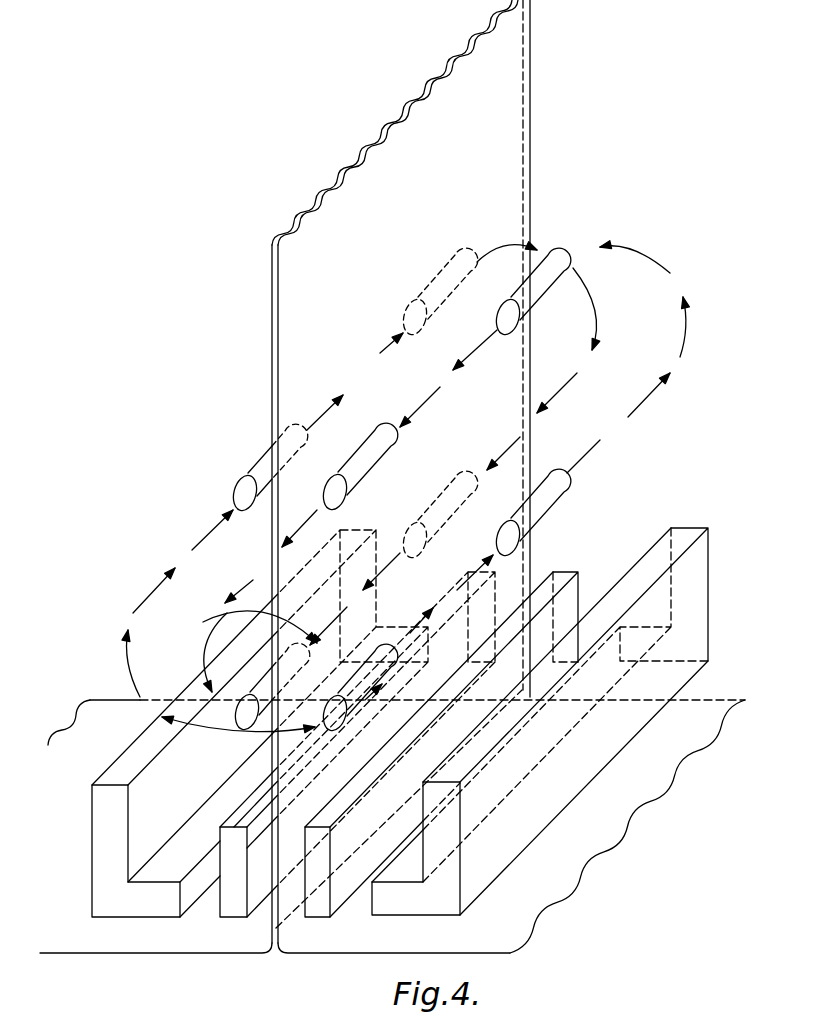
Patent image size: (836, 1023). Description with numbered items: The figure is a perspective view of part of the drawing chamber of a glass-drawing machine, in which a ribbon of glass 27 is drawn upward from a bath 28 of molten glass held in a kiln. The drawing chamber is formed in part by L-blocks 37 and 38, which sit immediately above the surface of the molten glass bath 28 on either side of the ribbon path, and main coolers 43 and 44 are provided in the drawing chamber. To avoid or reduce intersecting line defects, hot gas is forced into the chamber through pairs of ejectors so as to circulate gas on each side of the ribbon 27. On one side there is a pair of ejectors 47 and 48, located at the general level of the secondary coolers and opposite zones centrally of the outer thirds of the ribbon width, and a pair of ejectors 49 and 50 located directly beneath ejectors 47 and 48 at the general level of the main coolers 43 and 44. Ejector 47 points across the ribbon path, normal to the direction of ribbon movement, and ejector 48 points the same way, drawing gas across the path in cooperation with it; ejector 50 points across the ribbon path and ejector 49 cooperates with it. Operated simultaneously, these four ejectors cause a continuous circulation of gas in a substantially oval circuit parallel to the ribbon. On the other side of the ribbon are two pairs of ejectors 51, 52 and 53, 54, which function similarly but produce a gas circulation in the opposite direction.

The ribbon of glass 27 is at (493, 72).
The bath of molten glass 28 is at (463, 953).
The L-block 37 is at (112, 868).
The L-block 38 is at (580, 737).
The main cooler 43 is at (237, 893).
The main cooler 44 is at (315, 873).
The ejector 47 is at (263, 473).
The ejector 48 is at (445, 278).
The ejector 49 is at (253, 695).
The ejector 50 is at (457, 500).
The ejector 51 is at (362, 458).
The ejector 52 is at (537, 283).
The ejector 53 is at (210, 620).
The ejector 54 is at (543, 503).